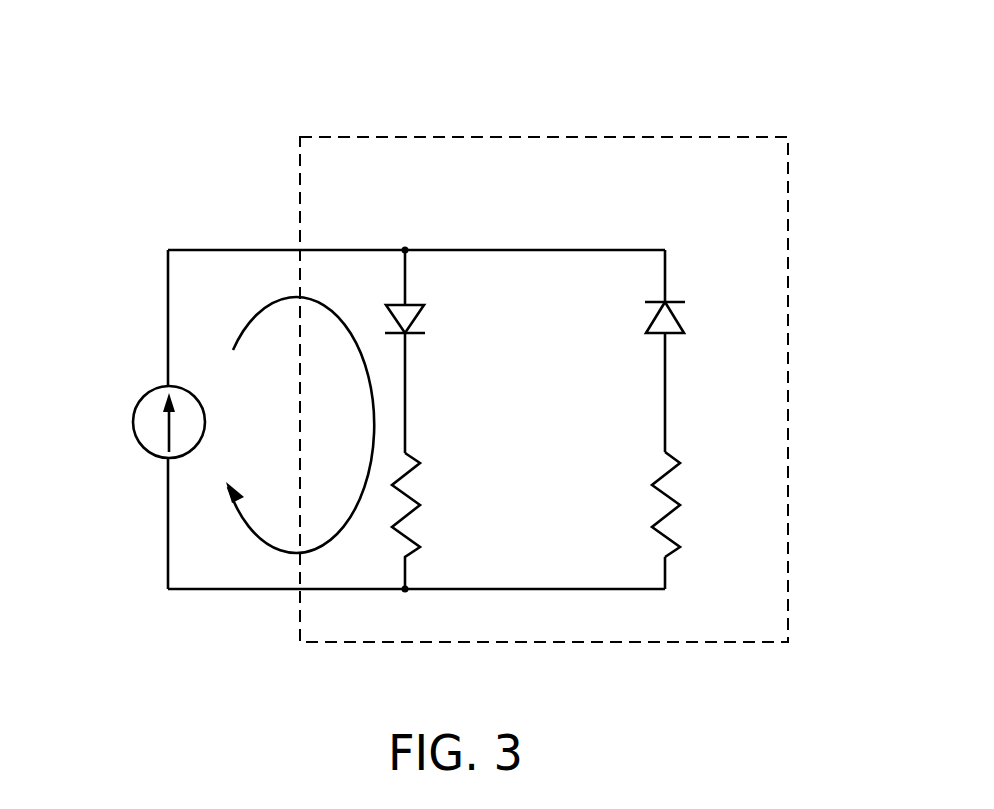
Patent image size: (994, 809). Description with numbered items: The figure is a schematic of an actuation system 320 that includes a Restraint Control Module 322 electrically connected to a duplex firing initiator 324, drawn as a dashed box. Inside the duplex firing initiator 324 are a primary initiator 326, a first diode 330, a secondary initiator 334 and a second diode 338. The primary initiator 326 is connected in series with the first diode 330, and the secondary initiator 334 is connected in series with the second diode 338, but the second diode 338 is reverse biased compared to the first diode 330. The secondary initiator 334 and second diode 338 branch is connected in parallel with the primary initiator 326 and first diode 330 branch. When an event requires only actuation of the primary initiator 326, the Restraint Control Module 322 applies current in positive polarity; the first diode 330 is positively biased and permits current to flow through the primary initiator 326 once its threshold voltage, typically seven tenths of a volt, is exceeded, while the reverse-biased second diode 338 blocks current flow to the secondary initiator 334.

The actuation system 320 is at (198, 129).
The Restraint Control Module 322 is at (152, 389).
The duplex firing initiator 324 is at (459, 137).
The primary initiator 326 is at (413, 492).
The first diode 330 is at (420, 303).
The secondary initiator 334 is at (668, 488).
The second diode 338 is at (676, 302).